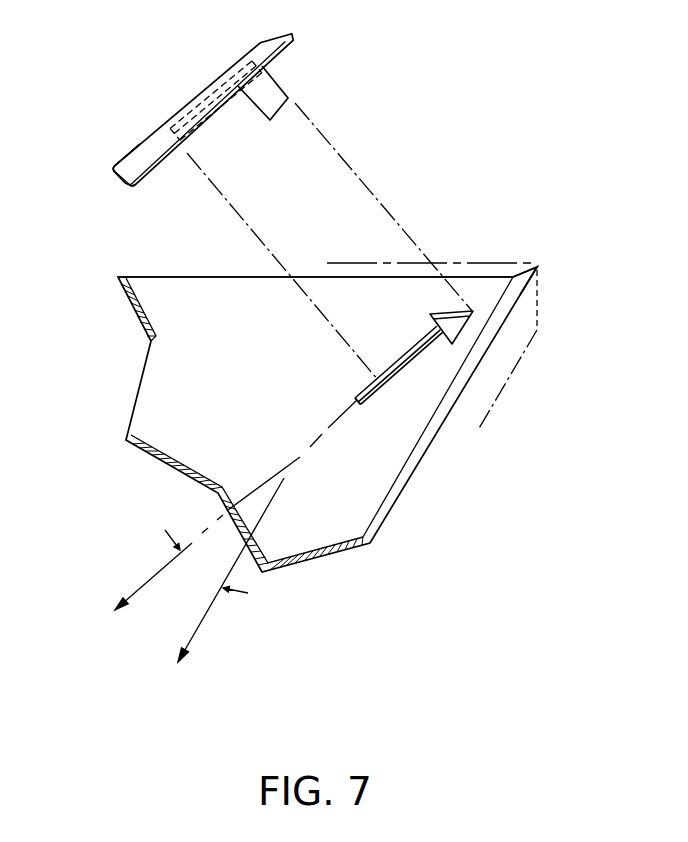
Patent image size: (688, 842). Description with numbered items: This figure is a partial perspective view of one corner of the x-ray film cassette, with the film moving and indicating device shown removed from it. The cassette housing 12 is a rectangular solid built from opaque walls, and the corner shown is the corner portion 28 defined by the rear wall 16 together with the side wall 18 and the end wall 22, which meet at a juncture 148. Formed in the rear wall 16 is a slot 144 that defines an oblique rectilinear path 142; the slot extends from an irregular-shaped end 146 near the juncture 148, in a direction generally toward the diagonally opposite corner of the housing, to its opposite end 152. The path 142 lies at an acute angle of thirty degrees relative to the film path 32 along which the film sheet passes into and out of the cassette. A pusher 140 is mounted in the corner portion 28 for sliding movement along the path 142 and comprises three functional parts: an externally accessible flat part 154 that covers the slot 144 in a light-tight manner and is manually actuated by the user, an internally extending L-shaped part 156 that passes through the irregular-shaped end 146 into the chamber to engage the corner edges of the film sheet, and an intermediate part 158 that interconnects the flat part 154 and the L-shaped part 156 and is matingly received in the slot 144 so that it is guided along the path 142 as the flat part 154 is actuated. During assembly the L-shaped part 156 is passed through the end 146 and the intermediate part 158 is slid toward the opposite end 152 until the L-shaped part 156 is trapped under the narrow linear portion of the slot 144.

The housing 12 is at (457, 275).
The rear wall 16 is at (247, 381).
The side wall 18 is at (498, 355).
The end wall 22 is at (372, 263).
The corner portion 28 is at (337, 518).
The film path 32 is at (207, 613).
The pusher 140 is at (197, 90).
The oblique rectilinear path 142 is at (285, 462).
The slot 144 is at (407, 368).
The irregular-shaped end 146 is at (440, 316).
The juncture 148 is at (515, 265).
The opposite end 152 is at (362, 407).
The flat part 154 is at (130, 162).
The L-shaped part 156 is at (272, 90).
The intermediate part 158 is at (205, 112).